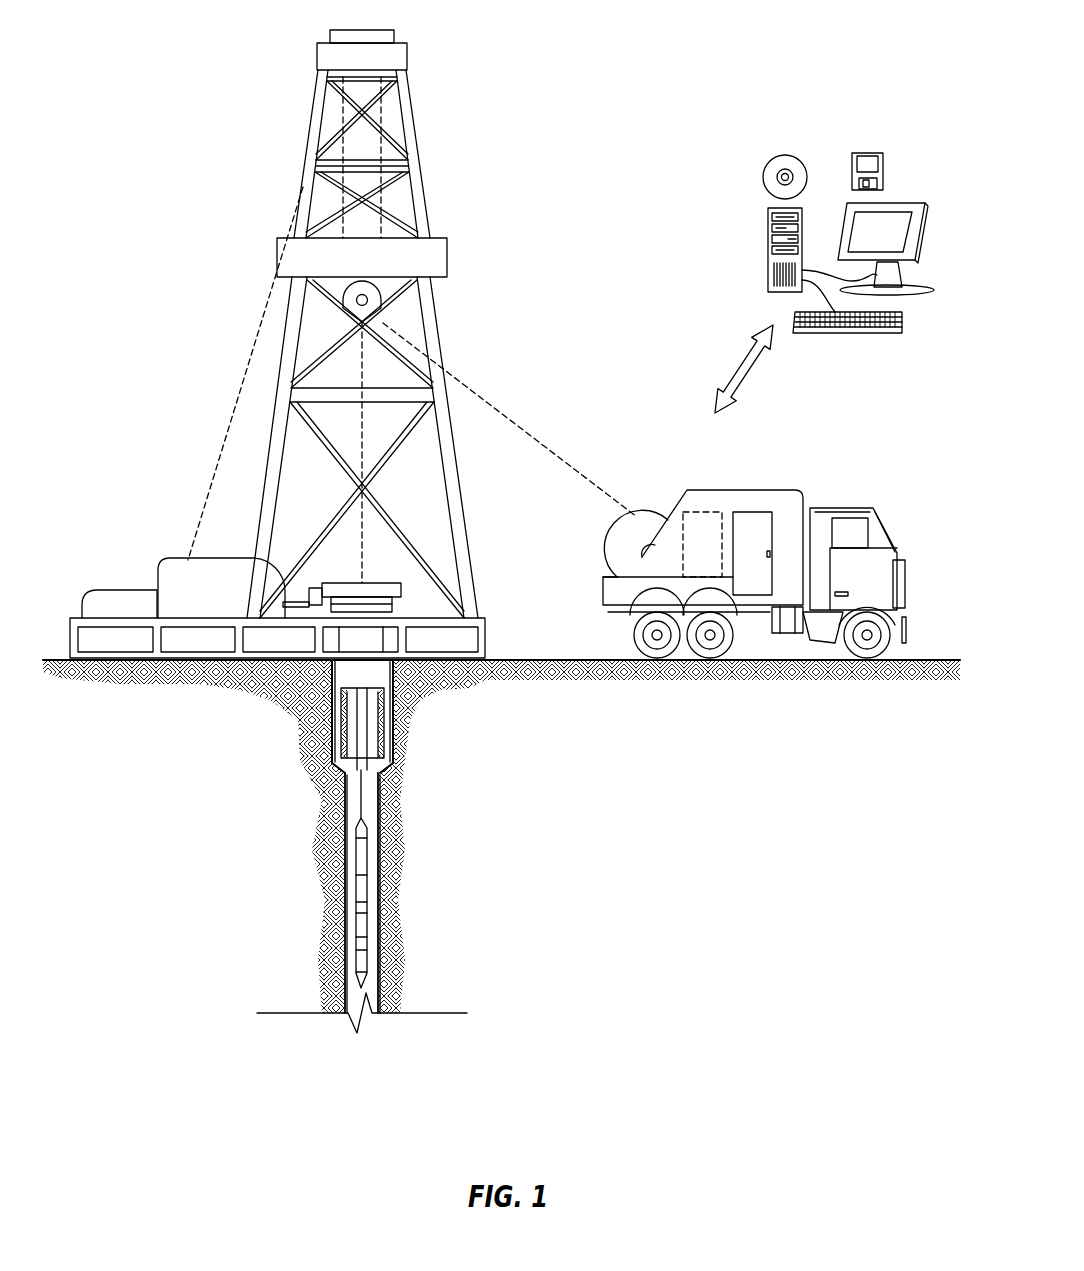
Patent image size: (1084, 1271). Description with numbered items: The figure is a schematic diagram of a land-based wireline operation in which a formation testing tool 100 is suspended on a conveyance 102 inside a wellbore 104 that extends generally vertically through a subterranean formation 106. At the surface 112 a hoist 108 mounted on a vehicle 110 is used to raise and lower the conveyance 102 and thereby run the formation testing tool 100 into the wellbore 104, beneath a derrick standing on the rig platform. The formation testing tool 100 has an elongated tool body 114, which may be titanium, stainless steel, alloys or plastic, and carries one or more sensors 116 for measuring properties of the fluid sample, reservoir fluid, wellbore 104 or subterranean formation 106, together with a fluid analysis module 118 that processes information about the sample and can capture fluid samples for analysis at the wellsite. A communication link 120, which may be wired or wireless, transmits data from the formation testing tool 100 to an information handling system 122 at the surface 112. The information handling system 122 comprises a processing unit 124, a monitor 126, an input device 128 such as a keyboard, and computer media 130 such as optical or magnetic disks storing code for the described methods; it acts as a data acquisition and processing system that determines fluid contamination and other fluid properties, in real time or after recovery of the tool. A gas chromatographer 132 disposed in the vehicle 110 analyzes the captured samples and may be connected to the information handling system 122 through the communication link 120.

The formation testing tool 100 is at (365, 903).
The conveyance 102 is at (361, 785).
The wellbore 104 is at (345, 840).
The subterranean formation 106 is at (566, 848).
The hoist 108 is at (610, 548).
The vehicle 110 is at (719, 550).
The surface 112 is at (915, 660).
The tool body 114 is at (352, 926).
The sensors 116 is at (368, 942).
The fluid analysis module 118 is at (356, 905).
The communication link 120 is at (755, 372).
The information handling system 122 is at (782, 249).
The processing unit 124 is at (768, 222).
The monitor 126 is at (903, 203).
The input device 128 is at (890, 335).
The computer media 130 is at (870, 150).
The gas chromatographer 132 is at (705, 512).